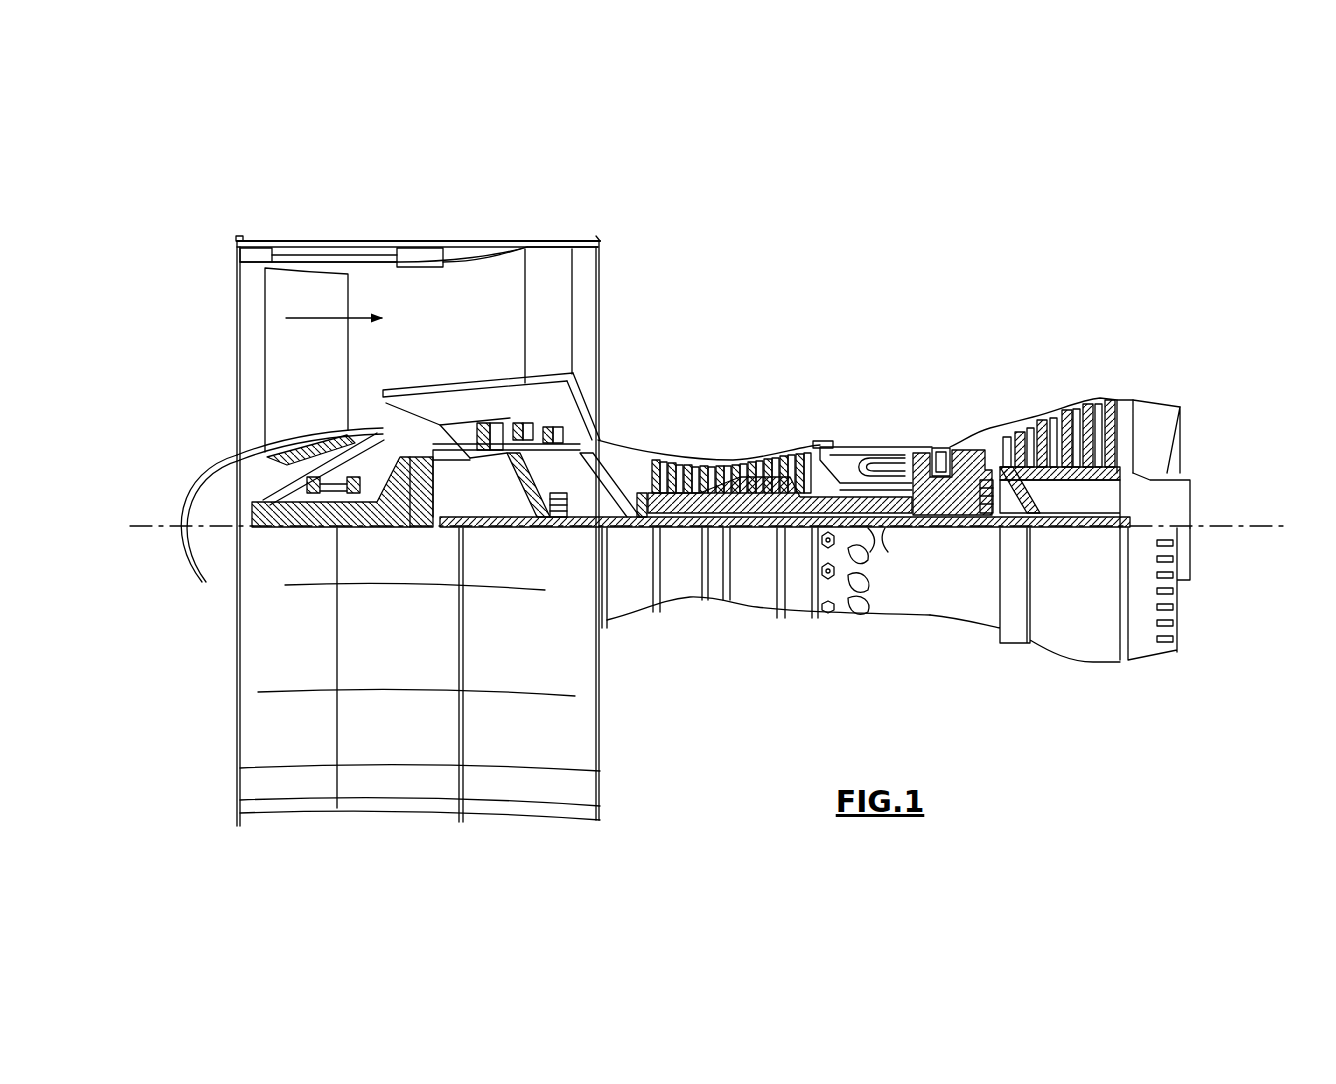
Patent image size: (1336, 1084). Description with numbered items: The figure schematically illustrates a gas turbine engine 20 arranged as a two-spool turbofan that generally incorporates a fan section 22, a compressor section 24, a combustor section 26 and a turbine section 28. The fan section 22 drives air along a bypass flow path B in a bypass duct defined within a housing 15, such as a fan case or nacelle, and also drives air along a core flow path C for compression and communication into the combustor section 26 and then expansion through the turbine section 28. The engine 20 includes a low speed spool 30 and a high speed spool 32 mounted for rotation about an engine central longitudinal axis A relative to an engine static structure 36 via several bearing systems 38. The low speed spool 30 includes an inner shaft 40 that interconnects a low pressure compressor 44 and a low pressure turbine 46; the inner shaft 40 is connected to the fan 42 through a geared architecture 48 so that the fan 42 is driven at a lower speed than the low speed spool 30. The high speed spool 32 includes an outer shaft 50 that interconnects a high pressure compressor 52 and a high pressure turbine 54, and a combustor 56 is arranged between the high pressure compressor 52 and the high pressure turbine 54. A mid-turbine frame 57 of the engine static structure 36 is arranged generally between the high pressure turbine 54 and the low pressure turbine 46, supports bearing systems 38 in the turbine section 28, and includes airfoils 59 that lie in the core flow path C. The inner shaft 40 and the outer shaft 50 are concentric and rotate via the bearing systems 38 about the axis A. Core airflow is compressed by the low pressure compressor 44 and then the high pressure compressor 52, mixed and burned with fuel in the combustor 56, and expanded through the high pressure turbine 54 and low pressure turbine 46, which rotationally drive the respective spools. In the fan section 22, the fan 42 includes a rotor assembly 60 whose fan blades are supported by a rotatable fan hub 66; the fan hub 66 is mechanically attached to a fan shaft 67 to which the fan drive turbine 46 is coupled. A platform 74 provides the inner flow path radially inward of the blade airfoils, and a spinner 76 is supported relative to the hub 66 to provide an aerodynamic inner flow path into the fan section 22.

The gas turbine engine 20 is at (880, 290).
The fan section 22 is at (348, 242).
The housing 15 is at (418, 249).
The compressor section 24 is at (650, 436).
The combustor section 26 is at (872, 428).
The turbine section 28 is at (1022, 386).
The low speed spool 30 is at (757, 532).
The high speed spool 32 is at (800, 468).
The engine static structure 36 is at (797, 618).
The bearing systems 38 is at (560, 512).
The inner shaft 40 is at (615, 545).
The fan 42 is at (306, 360).
The low pressure compressor 44 is at (527, 438).
The low pressure turbine 46 is at (1064, 425).
The geared architecture 48 is at (425, 470).
The outer shaft 50 is at (882, 510).
The high pressure compressor 52 is at (737, 460).
The high pressure turbine 54 is at (940, 455).
The combustor 56 is at (876, 465).
The mid-turbine frame 57 is at (980, 436).
The airfoils 59 is at (1010, 486).
The rotor assembly 60 is at (247, 490).
The fan hub 66 is at (243, 464).
The fan shaft 67 is at (375, 526).
The platform 74 is at (292, 433).
The spinner 76 is at (183, 503).
The engine central longitudinal axis A is at (1284, 526).
The bypass flow path B is at (330, 318).
The core flow path C is at (428, 423).